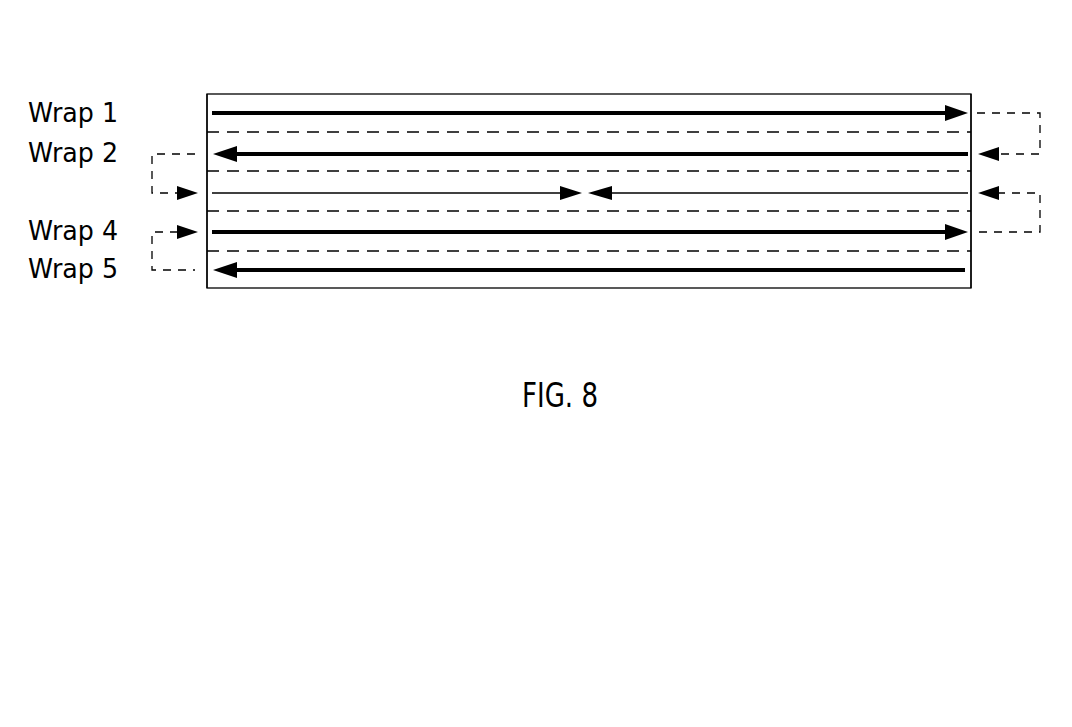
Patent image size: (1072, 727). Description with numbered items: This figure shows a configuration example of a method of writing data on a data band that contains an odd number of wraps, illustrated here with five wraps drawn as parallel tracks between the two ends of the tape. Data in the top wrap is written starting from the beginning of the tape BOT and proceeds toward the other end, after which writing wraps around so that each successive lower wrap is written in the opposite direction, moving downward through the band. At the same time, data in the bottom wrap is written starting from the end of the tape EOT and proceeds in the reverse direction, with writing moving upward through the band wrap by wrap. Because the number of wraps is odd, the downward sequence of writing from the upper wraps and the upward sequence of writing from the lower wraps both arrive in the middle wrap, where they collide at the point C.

The collision point C is at (583, 191).
The beginning of tape BOT is at (212, 173).
The end of tape EOT is at (964, 173).